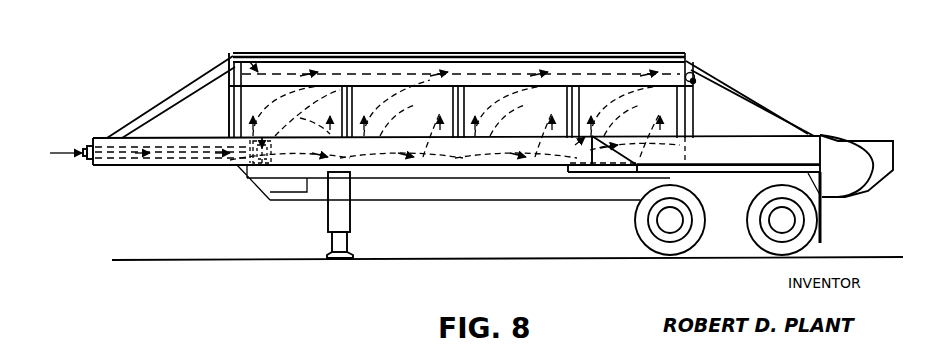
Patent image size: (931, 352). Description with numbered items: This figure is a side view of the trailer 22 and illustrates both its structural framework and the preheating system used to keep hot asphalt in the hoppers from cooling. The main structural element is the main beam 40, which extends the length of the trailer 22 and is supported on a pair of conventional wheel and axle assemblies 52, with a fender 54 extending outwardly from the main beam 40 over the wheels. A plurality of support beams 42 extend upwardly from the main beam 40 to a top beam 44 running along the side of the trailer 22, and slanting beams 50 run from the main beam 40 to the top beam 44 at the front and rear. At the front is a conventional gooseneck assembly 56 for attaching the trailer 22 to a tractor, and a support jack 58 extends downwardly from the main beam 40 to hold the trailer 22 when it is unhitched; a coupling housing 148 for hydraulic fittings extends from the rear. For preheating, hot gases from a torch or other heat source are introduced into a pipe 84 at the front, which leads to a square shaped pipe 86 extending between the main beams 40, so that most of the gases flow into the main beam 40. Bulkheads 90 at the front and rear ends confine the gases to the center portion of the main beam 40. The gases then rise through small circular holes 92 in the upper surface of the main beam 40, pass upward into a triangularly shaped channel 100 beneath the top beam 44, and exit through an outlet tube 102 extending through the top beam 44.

The trailer 22 is at (362, 51).
The main beam 40 is at (488, 152).
The support beam 42 is at (342, 101).
The top beam 44 is at (285, 70).
The slanting beam 50 is at (155, 113).
The wheel and axle assembly 52 is at (740, 236).
The fender 54 is at (783, 145).
The gooseneck assembly 56 is at (113, 168).
The support jack 58 is at (340, 217).
The pipe 84 is at (157, 160).
The square shaped pipe 86 is at (240, 167).
The bulkhead 90 is at (222, 145).
The hole 92 is at (615, 126).
The triangularly shaped channel 100 is at (580, 76).
The outlet tube 102 is at (698, 74).
The coupling housing 148 is at (880, 141).